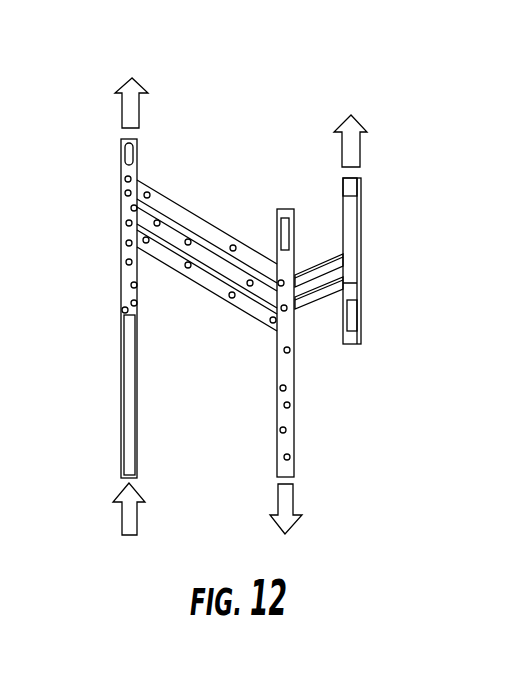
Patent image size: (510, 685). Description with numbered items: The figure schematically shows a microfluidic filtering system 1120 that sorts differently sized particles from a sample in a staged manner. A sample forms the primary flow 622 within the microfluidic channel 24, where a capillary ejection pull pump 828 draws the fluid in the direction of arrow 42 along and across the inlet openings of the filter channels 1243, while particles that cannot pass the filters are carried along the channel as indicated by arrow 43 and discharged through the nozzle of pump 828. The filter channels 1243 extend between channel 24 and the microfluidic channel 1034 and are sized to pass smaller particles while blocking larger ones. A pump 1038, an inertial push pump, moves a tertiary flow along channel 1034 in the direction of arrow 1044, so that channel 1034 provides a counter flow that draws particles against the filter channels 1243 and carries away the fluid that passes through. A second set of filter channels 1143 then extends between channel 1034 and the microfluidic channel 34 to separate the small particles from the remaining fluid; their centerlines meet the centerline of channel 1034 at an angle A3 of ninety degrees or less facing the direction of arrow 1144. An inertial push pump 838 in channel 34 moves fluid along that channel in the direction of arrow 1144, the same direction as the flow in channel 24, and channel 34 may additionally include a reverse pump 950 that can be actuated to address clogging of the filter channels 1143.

The microfluidic filtering system 1120 is at (93, 87).
The microfluidic channel 24 is at (120, 242).
The capillary ejection pull pump 828 is at (132, 157).
The primary flow 622 is at (135, 378).
The arrow 43 is at (139, 113).
The arrow 42 is at (137, 519).
The filter channels 1243 is at (196, 215).
The microfluidic channel 1034 is at (293, 437).
The pump 1038 is at (290, 222).
The arrow 1044 is at (293, 503).
The filter channels 1143 is at (313, 303).
The angle A3 is at (300, 237).
The microfluidic channel 34 is at (357, 262).
The reverse pump 950 is at (357, 187).
The inertial push pump 838 is at (355, 318).
The arrow 1144 is at (360, 150).